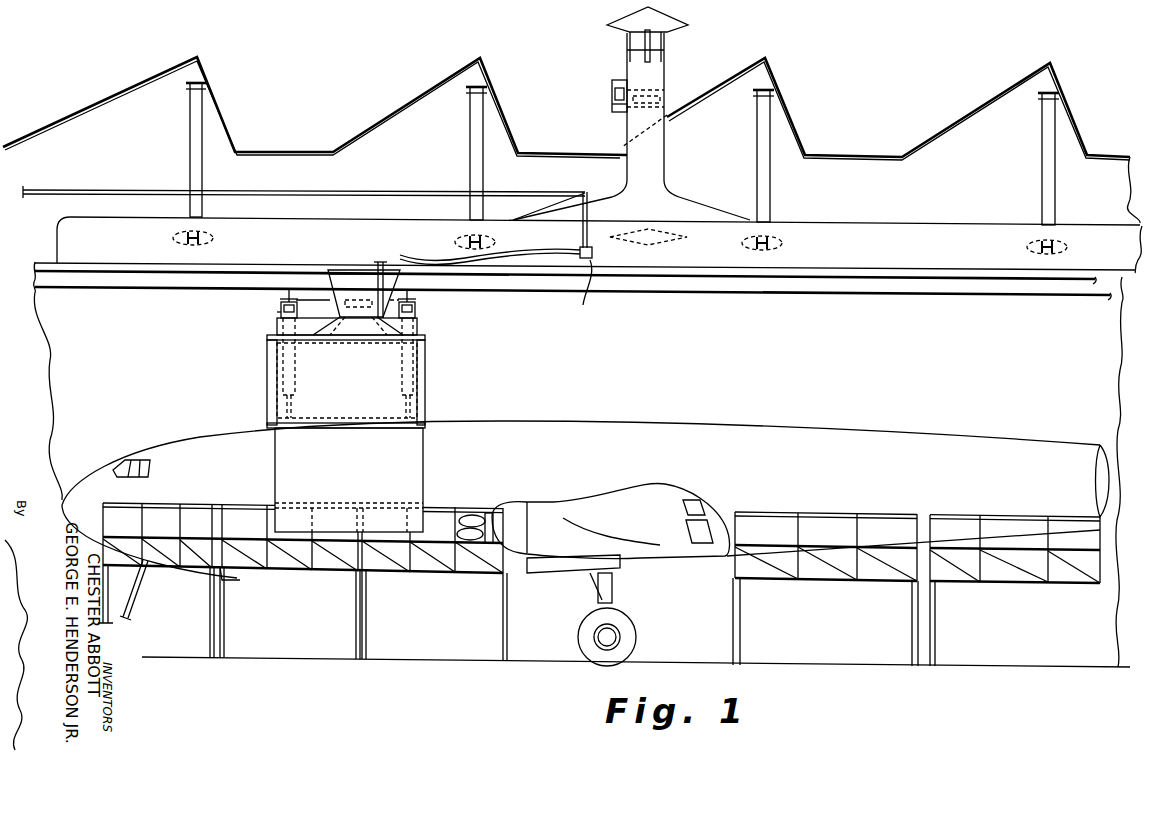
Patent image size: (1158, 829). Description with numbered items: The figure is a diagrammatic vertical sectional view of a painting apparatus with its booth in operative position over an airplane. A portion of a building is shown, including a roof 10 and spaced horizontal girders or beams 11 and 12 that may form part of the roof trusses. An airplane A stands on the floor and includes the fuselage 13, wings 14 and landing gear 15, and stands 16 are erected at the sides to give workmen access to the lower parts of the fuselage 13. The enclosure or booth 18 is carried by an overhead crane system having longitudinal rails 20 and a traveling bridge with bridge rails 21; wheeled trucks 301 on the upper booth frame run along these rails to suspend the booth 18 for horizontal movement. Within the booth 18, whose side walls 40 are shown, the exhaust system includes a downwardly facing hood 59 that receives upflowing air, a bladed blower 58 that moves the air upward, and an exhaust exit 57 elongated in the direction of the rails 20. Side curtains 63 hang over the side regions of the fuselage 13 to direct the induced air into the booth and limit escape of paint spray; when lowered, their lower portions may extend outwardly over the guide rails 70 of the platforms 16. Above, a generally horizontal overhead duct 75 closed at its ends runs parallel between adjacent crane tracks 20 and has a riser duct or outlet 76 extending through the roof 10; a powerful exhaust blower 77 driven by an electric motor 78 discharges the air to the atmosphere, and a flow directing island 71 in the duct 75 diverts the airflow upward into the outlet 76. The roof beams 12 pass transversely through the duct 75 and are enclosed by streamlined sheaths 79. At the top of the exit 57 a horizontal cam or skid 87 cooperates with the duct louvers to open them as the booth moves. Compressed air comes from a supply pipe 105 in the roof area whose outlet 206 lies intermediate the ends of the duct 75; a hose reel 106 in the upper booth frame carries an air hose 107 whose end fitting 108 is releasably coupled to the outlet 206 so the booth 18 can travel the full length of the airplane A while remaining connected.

The roof 10 is at (868, 148).
The girder or beam 11 is at (782, 96).
The girder or beam 12 is at (783, 243).
The fuselage 13 is at (668, 433).
The wings 14 is at (670, 500).
The landing gear 15 is at (612, 598).
The stands 16 is at (193, 503).
The booth 18 is at (425, 375).
The longitudinal rails 20 is at (800, 290).
The bridge rails 21 is at (277, 297).
The side walls 40 is at (364, 395).
The exhaust exit 57 is at (370, 296).
The blower 58 is at (347, 379).
The hood 59 is at (340, 312).
The side curtains 63 is at (360, 475).
The guide rails 70 is at (480, 507).
The flow directing island 71 is at (678, 237).
The overhead duct 75 is at (893, 227).
The riser duct or outlet 76 is at (657, 162).
The exhaust blower 77 is at (660, 90).
The electric motor 78 is at (612, 97).
The streamlined sheaths 79 is at (742, 245).
The cam or skid 87 is at (380, 262).
The air pressure supply pipe 105 is at (392, 190).
The hose reel 106 is at (415, 315).
The air hose 107 is at (437, 257).
The fitting 108 is at (580, 250).
The outlet 206 is at (606, 293).
The wheeled trucks 301 is at (275, 312).
The airplane A is at (830, 412).